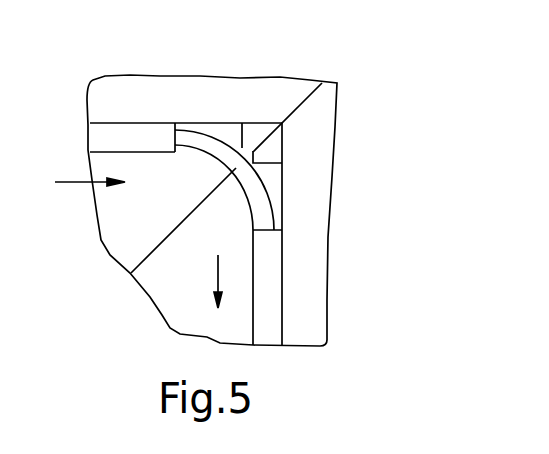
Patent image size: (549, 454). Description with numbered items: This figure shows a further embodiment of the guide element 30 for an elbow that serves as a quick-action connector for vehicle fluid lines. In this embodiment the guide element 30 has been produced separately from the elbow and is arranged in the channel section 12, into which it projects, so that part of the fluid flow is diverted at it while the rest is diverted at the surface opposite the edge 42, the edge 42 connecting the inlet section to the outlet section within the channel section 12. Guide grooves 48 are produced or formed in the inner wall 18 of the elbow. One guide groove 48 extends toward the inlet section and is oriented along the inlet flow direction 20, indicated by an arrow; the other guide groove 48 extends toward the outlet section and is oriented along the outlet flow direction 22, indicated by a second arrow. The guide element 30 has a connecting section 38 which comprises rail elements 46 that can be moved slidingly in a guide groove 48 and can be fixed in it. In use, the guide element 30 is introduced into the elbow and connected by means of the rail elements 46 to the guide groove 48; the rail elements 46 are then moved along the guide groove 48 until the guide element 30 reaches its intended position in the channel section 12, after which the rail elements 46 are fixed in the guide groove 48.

The channel section 12 is at (336, 104).
The inner wall 18 is at (122, 212).
The inlet flow direction 20 is at (67, 182).
The outlet flow direction 22 is at (218, 268).
The guide element 30 is at (277, 217).
The connecting section 38 is at (198, 123).
The edge 42 is at (295, 115).
The rail elements 46 is at (225, 130).
The guide grooves 48 is at (120, 135).